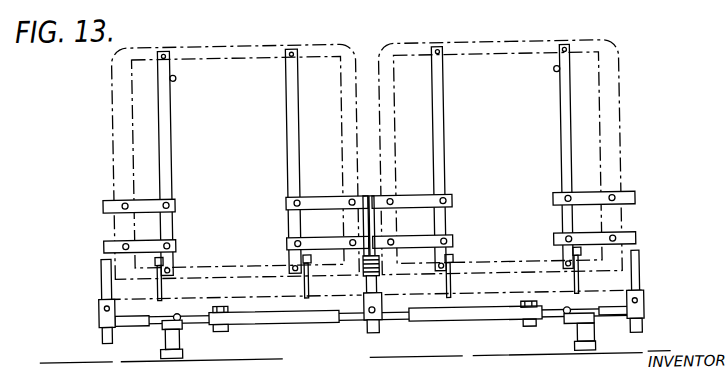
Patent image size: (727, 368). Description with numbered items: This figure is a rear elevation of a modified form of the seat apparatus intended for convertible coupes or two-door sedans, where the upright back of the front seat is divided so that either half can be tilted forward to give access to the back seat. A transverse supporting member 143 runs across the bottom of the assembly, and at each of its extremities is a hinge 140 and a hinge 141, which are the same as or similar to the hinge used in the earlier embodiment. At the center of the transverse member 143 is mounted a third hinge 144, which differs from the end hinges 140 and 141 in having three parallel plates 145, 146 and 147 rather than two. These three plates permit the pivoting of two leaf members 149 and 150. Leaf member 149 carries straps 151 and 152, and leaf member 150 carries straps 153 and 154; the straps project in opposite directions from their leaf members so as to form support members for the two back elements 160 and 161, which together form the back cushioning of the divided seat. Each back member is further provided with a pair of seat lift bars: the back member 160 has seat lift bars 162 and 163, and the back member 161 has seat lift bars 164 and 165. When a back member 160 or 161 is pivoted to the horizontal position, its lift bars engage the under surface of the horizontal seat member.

The hinge 140 is at (97, 293).
The hinge 141 is at (642, 295).
The transverse supporting member 143 is at (281, 321).
The third hinge 144 is at (386, 324).
The parallel plate 145 is at (363, 284).
The parallel plate 146 is at (379, 272).
The parallel plate 147 is at (382, 318).
The leaf member 149 is at (363, 222).
The leaf member 150 is at (374, 228).
The strap 151 is at (288, 195).
The strap 152 is at (287, 244).
The strap 153 is at (453, 196).
The strap 154 is at (452, 243).
The back element 160 is at (275, 44).
The back element 161 is at (481, 44).
The seat lift bar 162 is at (160, 293).
The seat lift bar 163 is at (302, 289).
The seat lift bar 164 is at (449, 290).
The seat lift bar 165 is at (573, 292).